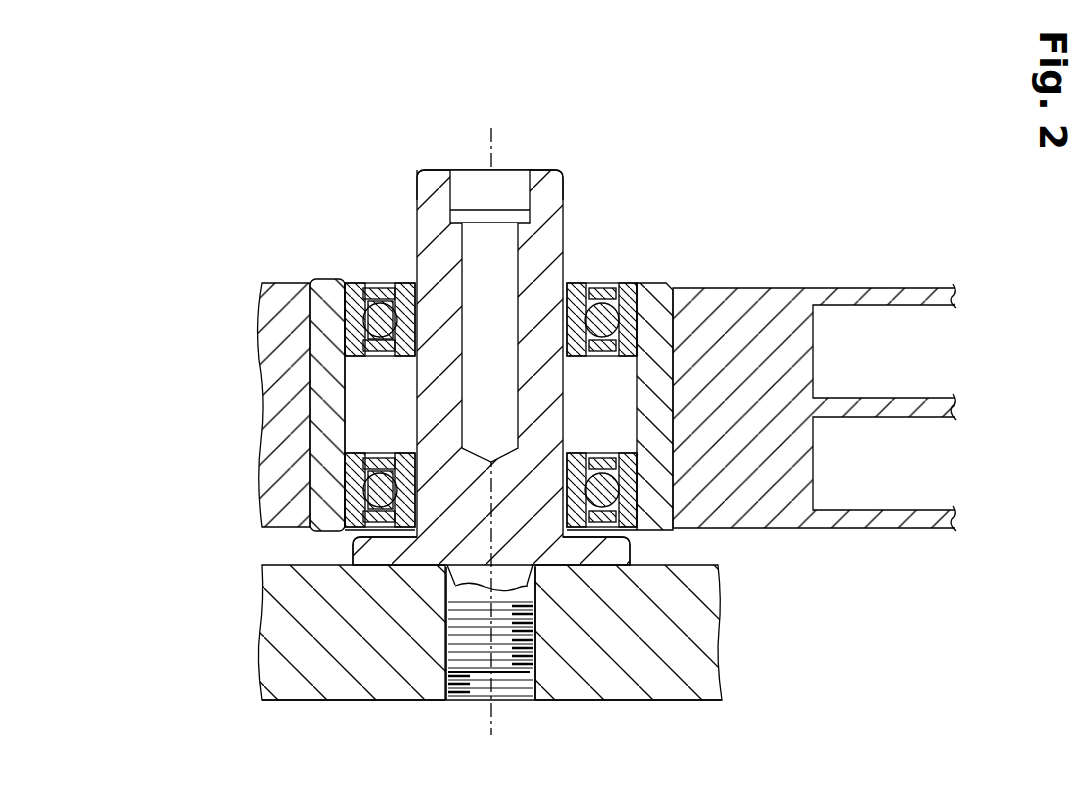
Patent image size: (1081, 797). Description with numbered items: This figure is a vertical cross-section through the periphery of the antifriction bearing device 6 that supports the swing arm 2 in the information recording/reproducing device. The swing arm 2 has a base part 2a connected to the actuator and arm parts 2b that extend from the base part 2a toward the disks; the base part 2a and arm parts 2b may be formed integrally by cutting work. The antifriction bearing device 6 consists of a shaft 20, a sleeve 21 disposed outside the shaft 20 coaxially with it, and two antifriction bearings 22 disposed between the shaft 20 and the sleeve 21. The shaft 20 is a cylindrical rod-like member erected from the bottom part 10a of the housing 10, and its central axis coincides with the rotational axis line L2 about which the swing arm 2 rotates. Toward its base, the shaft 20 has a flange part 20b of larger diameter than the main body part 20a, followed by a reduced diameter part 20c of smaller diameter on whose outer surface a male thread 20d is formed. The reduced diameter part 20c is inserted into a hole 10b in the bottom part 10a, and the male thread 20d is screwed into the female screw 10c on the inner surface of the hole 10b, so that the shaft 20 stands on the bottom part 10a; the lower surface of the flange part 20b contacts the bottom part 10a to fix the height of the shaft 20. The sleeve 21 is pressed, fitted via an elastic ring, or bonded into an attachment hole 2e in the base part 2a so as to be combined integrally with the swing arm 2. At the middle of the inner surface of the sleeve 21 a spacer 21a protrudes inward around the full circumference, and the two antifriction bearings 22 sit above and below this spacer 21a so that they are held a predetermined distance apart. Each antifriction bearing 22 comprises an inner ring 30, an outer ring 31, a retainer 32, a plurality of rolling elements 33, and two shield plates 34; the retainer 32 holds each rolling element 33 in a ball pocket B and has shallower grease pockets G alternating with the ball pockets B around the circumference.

The swing arm 2 is at (611, 373).
The base part 2a is at (744, 291).
The arm parts 2b is at (929, 296).
The attachment hole 2e is at (321, 282).
The antifriction bearing device 6 is at (448, 333).
The housing 10 is at (445, 674).
The bottom part 10a is at (350, 702).
The hole 10b is at (445, 635).
The female screw 10c is at (458, 693).
The shaft 20 is at (534, 441).
The main body part 20a is at (566, 212).
The flange part 20b is at (632, 552).
The reduced diameter part 20c is at (478, 674).
The male thread 20d is at (520, 666).
The sleeve 21 is at (446, 374).
The spacer 21a is at (345, 401).
The antifriction bearings 22 is at (366, 298).
The inner ring 30 is at (615, 284).
The outer ring 31 is at (634, 286).
The retainer 32 is at (352, 348).
The rolling elements 33 is at (611, 292).
The shield plates 34 is at (378, 282).
The ball pocket B is at (599, 302).
The grease pocket G is at (343, 312).
The rotational axis line L2 is at (494, 128).